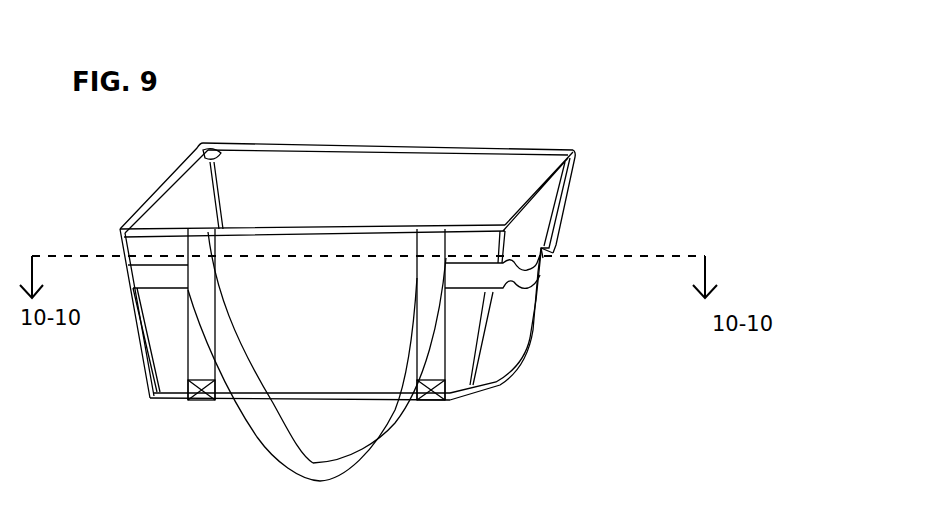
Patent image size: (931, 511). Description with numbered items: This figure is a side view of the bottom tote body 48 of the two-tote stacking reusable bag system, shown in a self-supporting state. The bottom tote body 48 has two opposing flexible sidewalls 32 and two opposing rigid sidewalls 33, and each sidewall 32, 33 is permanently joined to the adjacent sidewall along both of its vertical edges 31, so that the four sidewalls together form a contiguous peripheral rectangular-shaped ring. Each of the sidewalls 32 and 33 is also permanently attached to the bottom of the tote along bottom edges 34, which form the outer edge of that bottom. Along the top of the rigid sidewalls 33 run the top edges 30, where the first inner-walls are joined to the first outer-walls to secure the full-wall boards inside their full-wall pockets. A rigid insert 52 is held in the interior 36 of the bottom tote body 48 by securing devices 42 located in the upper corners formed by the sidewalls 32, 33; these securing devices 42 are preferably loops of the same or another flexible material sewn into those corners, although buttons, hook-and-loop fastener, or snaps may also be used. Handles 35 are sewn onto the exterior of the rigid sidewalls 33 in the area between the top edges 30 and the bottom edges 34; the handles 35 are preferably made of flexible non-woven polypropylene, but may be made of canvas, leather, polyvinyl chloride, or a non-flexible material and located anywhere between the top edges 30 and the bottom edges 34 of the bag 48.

The top edges 30 is at (425, 147).
The vertical edges 31 is at (565, 187).
The flexible sidewalls 32 is at (507, 335).
The rigid sidewalls 33 is at (163, 335).
The bottom edges 34 is at (508, 360).
The handles 35 is at (385, 422).
The interior 36 is at (307, 168).
The securing devices 42 is at (212, 153).
The bottom tote body 48 is at (733, 147).
The rigid insert 52 is at (543, 247).